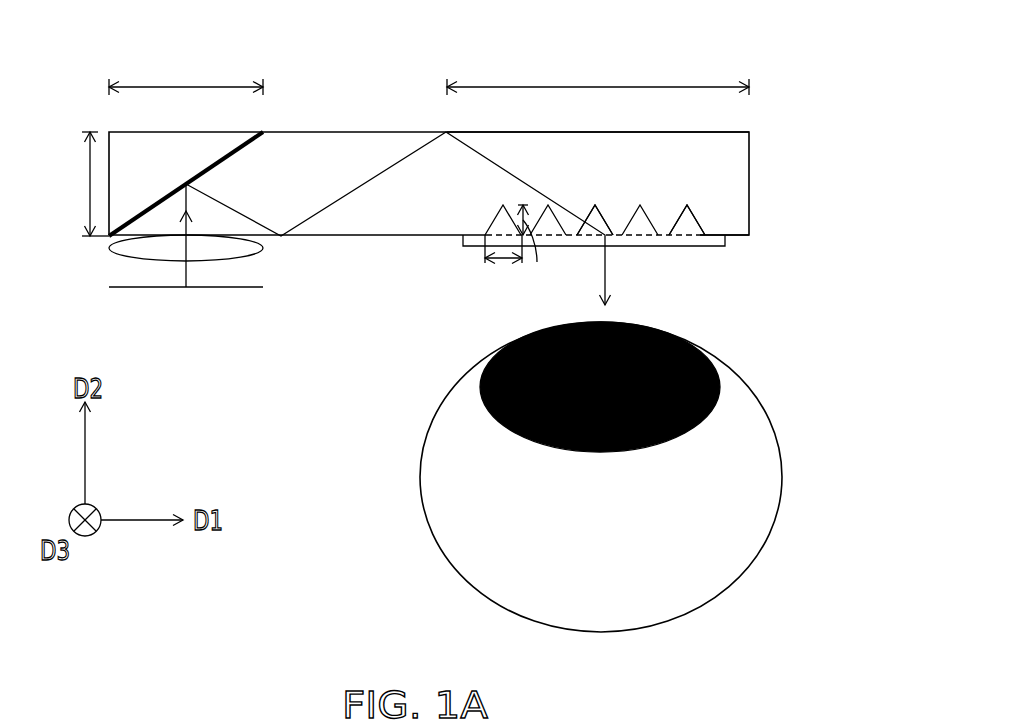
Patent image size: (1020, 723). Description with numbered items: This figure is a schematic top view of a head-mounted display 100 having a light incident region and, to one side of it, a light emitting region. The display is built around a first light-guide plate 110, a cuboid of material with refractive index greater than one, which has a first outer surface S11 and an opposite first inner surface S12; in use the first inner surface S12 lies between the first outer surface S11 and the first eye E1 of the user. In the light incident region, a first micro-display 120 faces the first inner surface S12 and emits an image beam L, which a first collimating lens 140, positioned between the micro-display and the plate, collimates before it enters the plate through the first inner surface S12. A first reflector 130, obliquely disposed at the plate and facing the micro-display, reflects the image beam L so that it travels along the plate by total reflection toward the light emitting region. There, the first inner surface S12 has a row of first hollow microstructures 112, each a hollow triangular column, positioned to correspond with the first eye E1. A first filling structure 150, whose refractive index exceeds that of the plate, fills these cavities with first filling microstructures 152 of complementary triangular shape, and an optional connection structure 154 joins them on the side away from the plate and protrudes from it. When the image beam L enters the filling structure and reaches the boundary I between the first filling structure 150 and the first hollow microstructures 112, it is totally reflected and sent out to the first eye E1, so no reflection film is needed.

The head-mounted display 100 is at (765, 59).
The first light-guide plate 110 is at (720, 174).
The first hollow microstructures 112 is at (700, 221).
The first micro-display 120 is at (135, 289).
The first reflector 130 is at (221, 160).
The first collimating lens 140 is at (131, 257).
The first filling structure 150 is at (735, 290).
The first filling microstructures 152 is at (684, 228).
The connection structure 154 is at (710, 242).
The first outer surface S11 is at (728, 130).
The first inner surface S12 is at (739, 239).
The first eye E1 is at (425, 452).
The image beam L is at (189, 277).
The boundary I is at (600, 212).